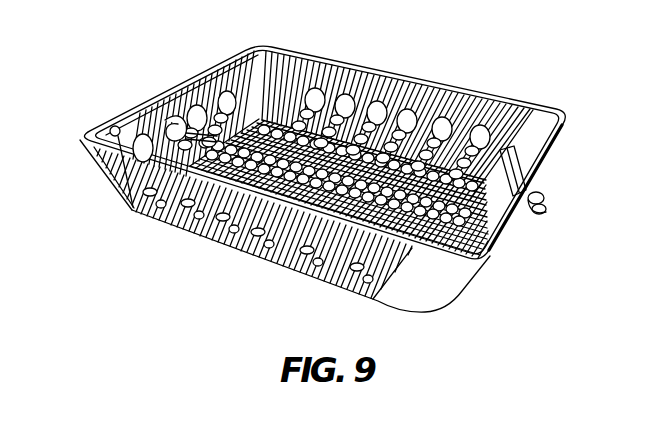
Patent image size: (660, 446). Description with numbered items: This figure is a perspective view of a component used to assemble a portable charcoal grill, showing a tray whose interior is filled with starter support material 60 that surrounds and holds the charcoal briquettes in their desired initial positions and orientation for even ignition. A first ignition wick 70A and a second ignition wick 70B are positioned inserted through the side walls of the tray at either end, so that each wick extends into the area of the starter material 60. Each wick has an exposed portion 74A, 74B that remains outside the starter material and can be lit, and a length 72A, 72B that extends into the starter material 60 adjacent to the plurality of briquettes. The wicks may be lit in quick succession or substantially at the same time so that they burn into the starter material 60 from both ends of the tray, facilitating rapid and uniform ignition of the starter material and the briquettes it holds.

The starter material 60 is at (373, 88).
The first ignition wick 70A is at (518, 140).
The second ignition wick 70B is at (192, 116).
The length of first wick 72A is at (492, 257).
The length of second wick 72B is at (148, 191).
The exposed portion of first wick 74A is at (548, 196).
The exposed portion of second wick 74B is at (170, 123).